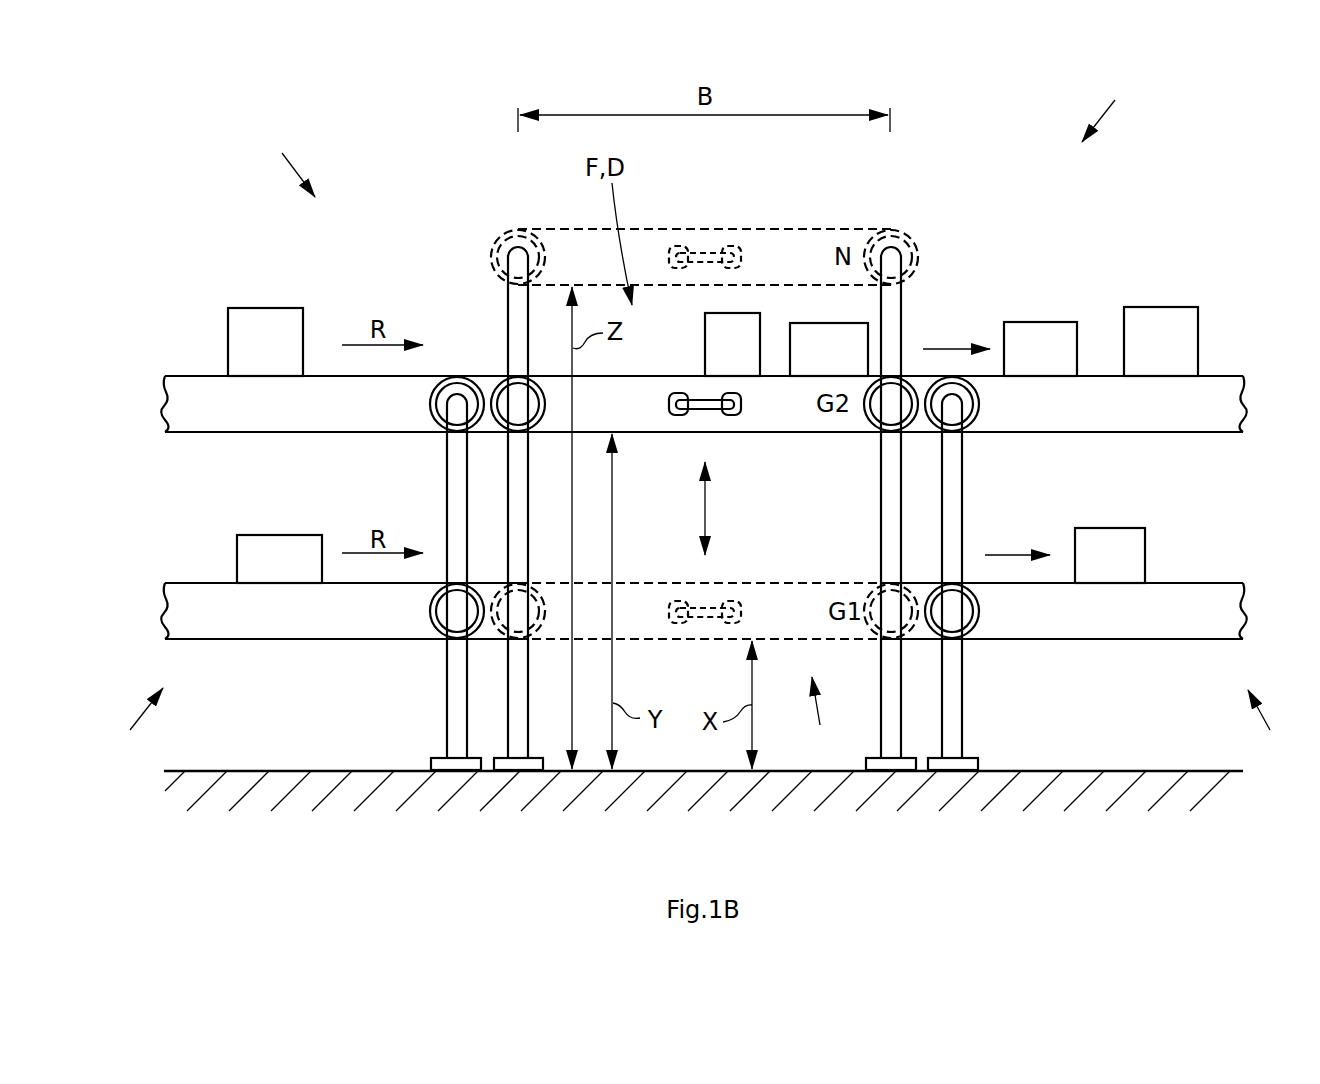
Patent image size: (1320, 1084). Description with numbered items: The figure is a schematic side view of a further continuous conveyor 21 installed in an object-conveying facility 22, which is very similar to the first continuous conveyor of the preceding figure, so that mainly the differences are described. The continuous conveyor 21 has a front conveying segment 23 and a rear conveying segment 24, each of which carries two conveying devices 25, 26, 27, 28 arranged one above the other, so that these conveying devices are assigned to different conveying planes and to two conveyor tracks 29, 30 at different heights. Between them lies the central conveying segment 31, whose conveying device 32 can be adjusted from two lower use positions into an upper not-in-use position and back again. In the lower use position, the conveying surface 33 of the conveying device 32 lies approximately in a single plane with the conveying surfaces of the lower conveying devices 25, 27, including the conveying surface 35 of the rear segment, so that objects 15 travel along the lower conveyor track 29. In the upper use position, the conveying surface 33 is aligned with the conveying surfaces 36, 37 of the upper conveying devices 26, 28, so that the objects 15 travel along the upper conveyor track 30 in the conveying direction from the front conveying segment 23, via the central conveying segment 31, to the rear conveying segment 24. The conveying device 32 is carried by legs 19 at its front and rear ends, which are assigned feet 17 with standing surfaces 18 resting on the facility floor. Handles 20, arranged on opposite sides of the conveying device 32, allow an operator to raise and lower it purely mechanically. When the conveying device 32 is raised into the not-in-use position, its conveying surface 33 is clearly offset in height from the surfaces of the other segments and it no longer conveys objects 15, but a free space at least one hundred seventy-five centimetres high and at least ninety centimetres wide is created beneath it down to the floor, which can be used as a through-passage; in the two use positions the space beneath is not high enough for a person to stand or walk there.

The objects 15 is at (265, 310).
The feet 17 is at (508, 762).
The standing surface 18 is at (528, 762).
The legs 19 is at (520, 666).
The handles 20 is at (712, 258).
The continuous conveyor 21 is at (285, 160).
The object-conveying facility 22 is at (1112, 106).
The front conveying segment 23 is at (133, 724).
The rear conveying segment 24 is at (1272, 725).
The lower conveying device of the front conveying segment 25 is at (340, 640).
The upper conveying device of the front conveying segment 26 is at (340, 433).
The lower conveying device of the rear conveying segment 27 is at (1120, 640).
The upper conveying device of the rear conveying segment 28 is at (1120, 433).
The lower conveyor track 29 is at (1017, 540).
The upper conveyor track 30 is at (956, 332).
The central conveying segment 31 is at (822, 716).
The conveying device of the central conveying segment 32 is at (800, 240).
The conveying surface of the central conveying device 33 is at (677, 228).
The conveying surface of the lower rear conveying device 35 is at (1217, 583).
The conveying surface of the upper front conveying device 36 is at (192, 376).
The conveying surface of the upper rear conveying device 37 is at (1222, 376).